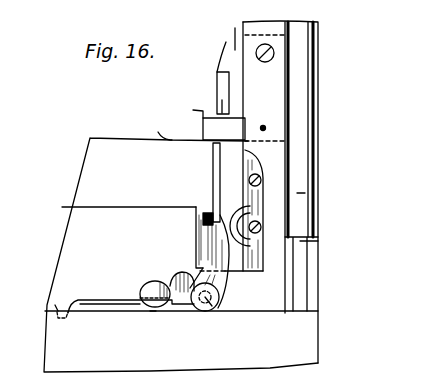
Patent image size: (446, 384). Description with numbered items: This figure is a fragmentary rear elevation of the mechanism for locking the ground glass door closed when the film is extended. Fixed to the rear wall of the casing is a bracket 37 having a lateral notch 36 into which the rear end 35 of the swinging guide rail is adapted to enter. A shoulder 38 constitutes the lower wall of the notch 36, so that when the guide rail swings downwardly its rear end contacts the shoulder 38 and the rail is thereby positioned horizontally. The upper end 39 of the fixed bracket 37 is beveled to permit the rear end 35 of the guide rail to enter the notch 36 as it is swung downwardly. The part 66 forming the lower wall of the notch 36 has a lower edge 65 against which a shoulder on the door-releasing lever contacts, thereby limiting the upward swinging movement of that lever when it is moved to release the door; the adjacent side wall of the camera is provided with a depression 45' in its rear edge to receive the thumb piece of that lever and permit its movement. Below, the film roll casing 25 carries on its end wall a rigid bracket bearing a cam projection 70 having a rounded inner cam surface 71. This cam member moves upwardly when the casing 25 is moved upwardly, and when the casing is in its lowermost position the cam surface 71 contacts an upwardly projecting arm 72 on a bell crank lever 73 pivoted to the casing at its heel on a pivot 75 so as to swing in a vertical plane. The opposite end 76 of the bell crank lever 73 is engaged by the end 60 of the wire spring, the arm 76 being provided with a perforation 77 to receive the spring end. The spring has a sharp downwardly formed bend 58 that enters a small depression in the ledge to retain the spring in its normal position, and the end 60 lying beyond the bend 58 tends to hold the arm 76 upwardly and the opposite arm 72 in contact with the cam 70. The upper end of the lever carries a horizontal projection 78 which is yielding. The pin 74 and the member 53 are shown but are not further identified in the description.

The film roll casing 25 is at (112, 150).
The rear end of the guide rail 35 is at (217, 78).
The lateral notch 36 is at (222, 112).
The bracket 37 is at (236, 28).
The shoulder 38 is at (183, 108).
The upper end of the fixed bracket 39 is at (220, 48).
The lower edge of the part 65 is at (192, 127).
The part forming the lower wall of the notch 66 is at (212, 122).
The cam projection 70 is at (243, 213).
The rounded inner cam surface 71 is at (222, 240).
The upwardly projecting arm 72 is at (203, 232).
The bell crank lever 73 is at (183, 278).
The pivot pin 74 is at (212, 306).
The pivot 75 is at (230, 293).
The opposite end of the bell crank lever 76 is at (155, 284).
The perforation 77 is at (153, 313).
The horizontal projection 78 is at (196, 213).
The downwardly formed bend 58 is at (72, 303).
The end of the spring 60 is at (108, 300).
The depression 45' is at (342, 227).
The upright bar 53 is at (298, 273).